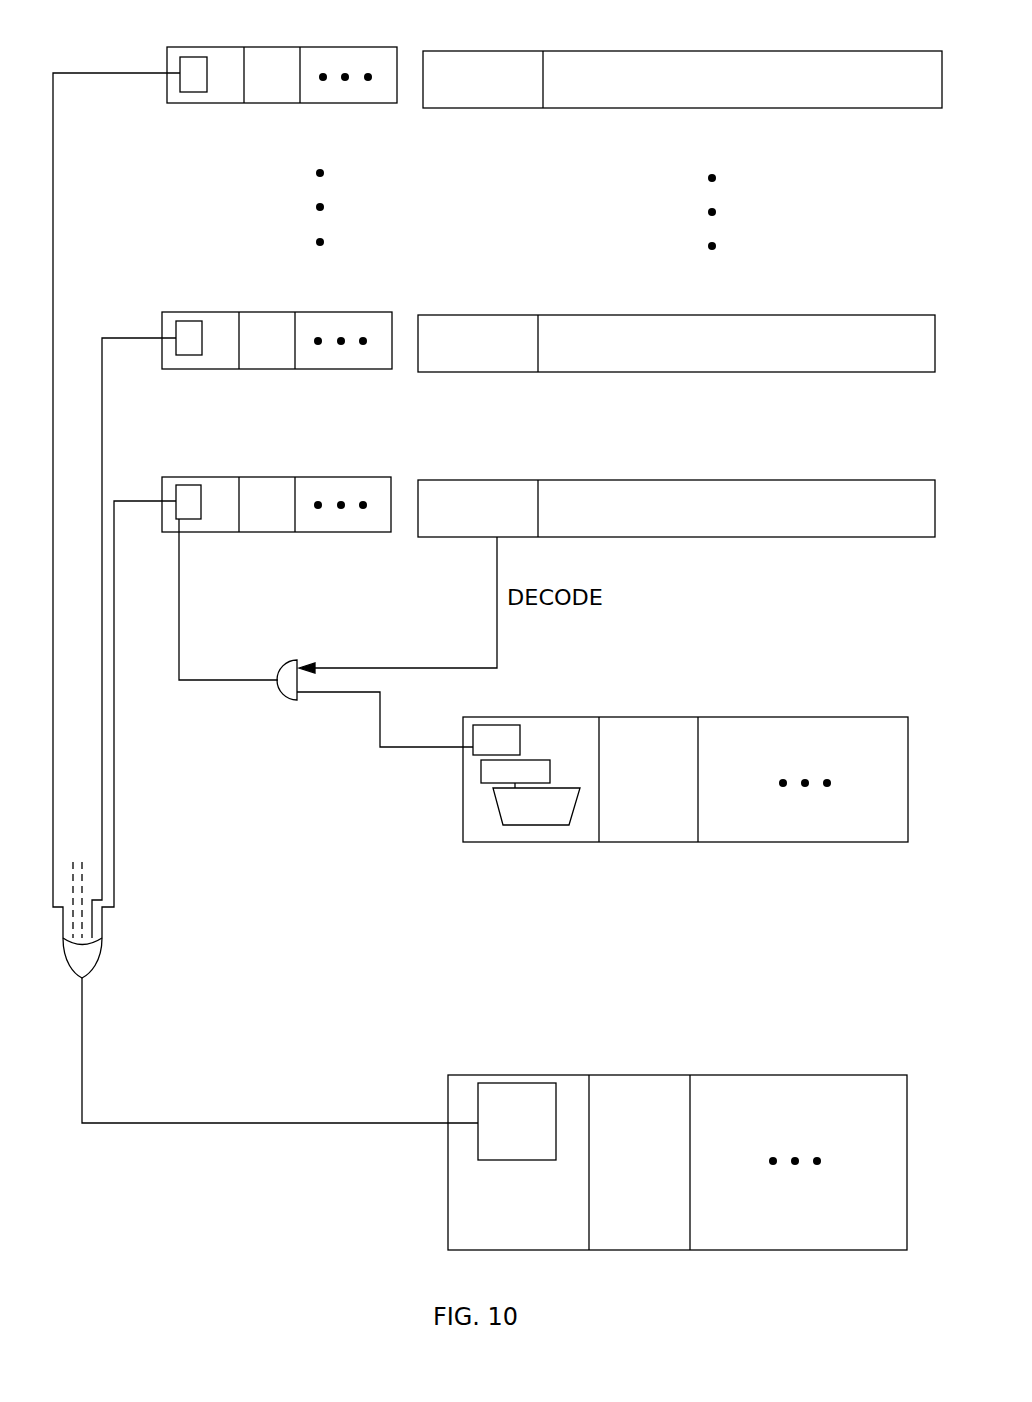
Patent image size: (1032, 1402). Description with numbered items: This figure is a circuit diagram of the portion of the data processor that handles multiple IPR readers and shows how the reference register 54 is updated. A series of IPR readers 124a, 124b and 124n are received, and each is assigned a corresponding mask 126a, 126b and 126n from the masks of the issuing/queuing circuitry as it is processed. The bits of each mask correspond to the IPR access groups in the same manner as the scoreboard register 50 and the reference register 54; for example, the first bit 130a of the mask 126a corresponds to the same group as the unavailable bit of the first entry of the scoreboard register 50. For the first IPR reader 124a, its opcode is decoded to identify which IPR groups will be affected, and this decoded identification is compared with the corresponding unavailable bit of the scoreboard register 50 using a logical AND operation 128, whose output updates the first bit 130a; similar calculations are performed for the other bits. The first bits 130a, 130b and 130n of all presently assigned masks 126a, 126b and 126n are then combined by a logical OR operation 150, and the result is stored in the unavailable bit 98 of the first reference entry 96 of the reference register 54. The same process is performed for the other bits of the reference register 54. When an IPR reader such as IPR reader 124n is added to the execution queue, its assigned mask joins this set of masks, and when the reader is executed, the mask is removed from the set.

The mask 126n is at (387, 47).
The first bit of mask 130n is at (193, 92).
The IPR reader 124n is at (861, 51).
The mask 126b is at (375, 312).
The first bit of mask 130b is at (190, 355).
The IPR reader 124b is at (863, 315).
The mask 126a is at (375, 477).
The first bit of mask 130a is at (192, 519).
The IPR reader 124a is at (857, 480).
The logical AND operation 128 is at (294, 701).
The scoreboard register 50 is at (856, 717).
The logical OR operation 150 is at (97, 955).
The reference register 54 is at (677, 1143).
The unavailable bit 98 is at (531, 1133).
The first reference entry 96 is at (531, 1210).